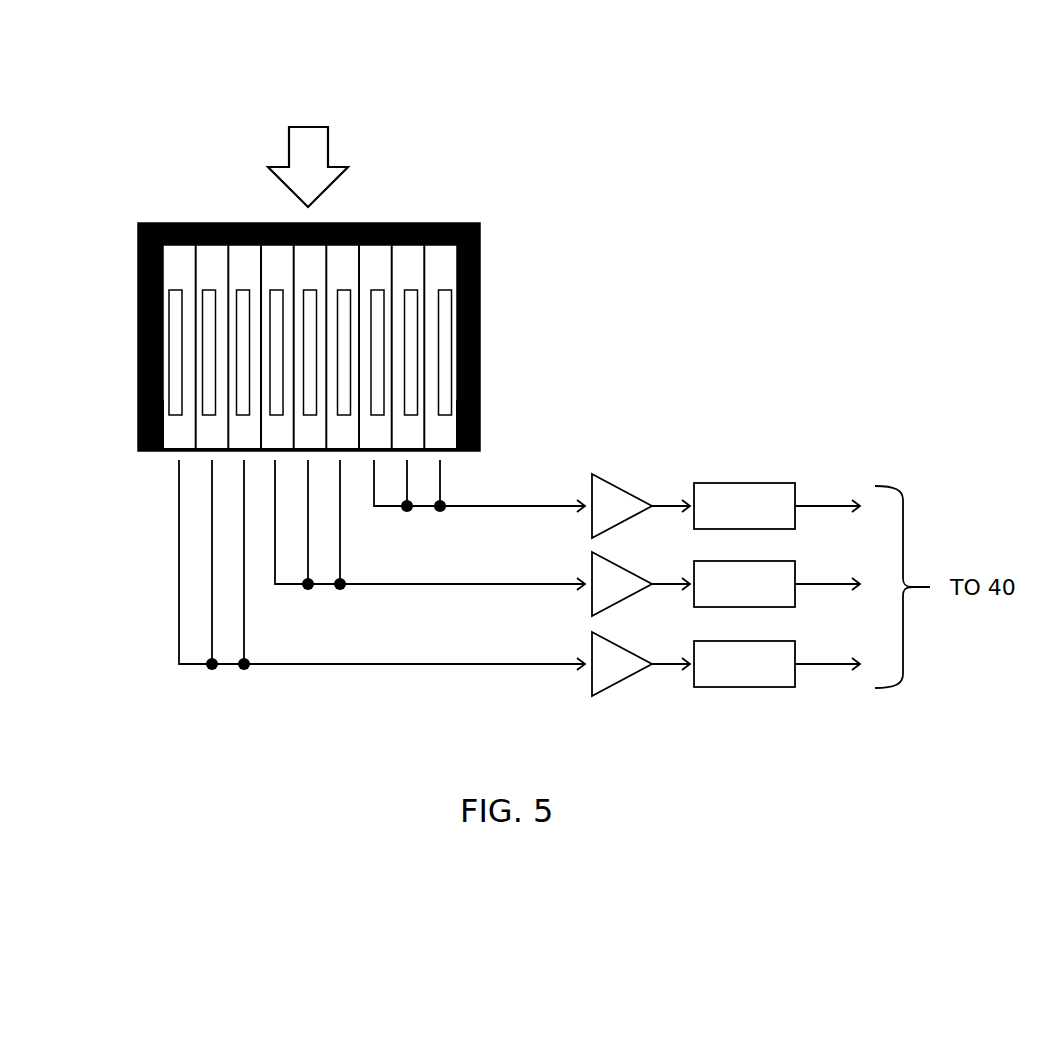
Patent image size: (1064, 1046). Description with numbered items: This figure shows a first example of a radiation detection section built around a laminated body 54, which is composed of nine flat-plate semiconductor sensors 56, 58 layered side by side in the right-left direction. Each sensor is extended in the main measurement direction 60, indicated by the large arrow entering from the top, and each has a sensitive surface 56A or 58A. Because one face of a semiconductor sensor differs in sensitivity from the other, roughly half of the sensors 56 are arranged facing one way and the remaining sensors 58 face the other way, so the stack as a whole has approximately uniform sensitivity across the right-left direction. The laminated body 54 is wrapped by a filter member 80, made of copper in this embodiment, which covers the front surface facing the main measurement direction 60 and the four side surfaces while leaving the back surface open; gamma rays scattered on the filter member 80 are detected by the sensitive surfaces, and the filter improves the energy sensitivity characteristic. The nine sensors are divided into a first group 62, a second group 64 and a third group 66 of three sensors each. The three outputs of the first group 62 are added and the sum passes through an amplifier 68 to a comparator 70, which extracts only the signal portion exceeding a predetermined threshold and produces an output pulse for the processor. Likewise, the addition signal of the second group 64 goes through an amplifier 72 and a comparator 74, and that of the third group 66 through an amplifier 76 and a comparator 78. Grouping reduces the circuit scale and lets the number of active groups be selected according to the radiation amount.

The main measurement direction 60 is at (330, 145).
The first group 62 is at (413, 236).
The second group 64 is at (315, 229).
The third group 66 is at (215, 236).
The filter member 80 is at (138, 288).
The laminated body 54 is at (471, 332).
The sensitive surface 58A is at (170, 348).
The sensor 58 is at (165, 413).
The sensitive surface 56A is at (451, 383).
The sensor 56 is at (456, 427).
The amplifier 68 is at (615, 486).
The amplifier 72 is at (620, 566).
The amplifier 76 is at (620, 653).
The comparator 70 is at (740, 483).
The comparator 74 is at (752, 563).
The comparator 78 is at (770, 642).